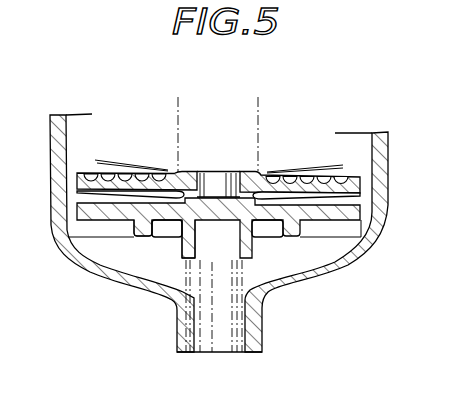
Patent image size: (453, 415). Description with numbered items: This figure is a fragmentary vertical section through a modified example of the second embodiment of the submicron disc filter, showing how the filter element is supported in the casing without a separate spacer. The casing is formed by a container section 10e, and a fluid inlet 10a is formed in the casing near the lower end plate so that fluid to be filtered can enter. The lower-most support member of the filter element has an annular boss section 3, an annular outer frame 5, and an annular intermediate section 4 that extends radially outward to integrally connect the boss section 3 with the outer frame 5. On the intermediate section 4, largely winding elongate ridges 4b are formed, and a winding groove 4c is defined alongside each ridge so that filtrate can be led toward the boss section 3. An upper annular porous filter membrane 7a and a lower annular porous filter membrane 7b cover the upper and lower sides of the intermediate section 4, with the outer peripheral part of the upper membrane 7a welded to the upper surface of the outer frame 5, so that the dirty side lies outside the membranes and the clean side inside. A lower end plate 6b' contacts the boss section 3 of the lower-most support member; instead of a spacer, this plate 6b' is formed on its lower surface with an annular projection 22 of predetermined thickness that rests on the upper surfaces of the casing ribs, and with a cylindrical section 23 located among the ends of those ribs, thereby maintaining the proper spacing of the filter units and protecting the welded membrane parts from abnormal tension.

The container section 10e is at (68, 147).
The fluid inlet 10a is at (258, 334).
The lower end plate 6b' is at (253, 227).
The largely winding elongate ridge 4b is at (140, 172).
The upper annular porous filter membrane 7a is at (130, 172).
The annular intermediate section 4 is at (330, 182).
The winding groove 4c is at (300, 192).
The annular outer frame 5 is at (78, 191).
The lower annular porous filter membrane 7b is at (334, 197).
The annular boss section 3 is at (252, 172).
The annular projection 22 is at (140, 223).
The cylindrical section 23 is at (203, 250).